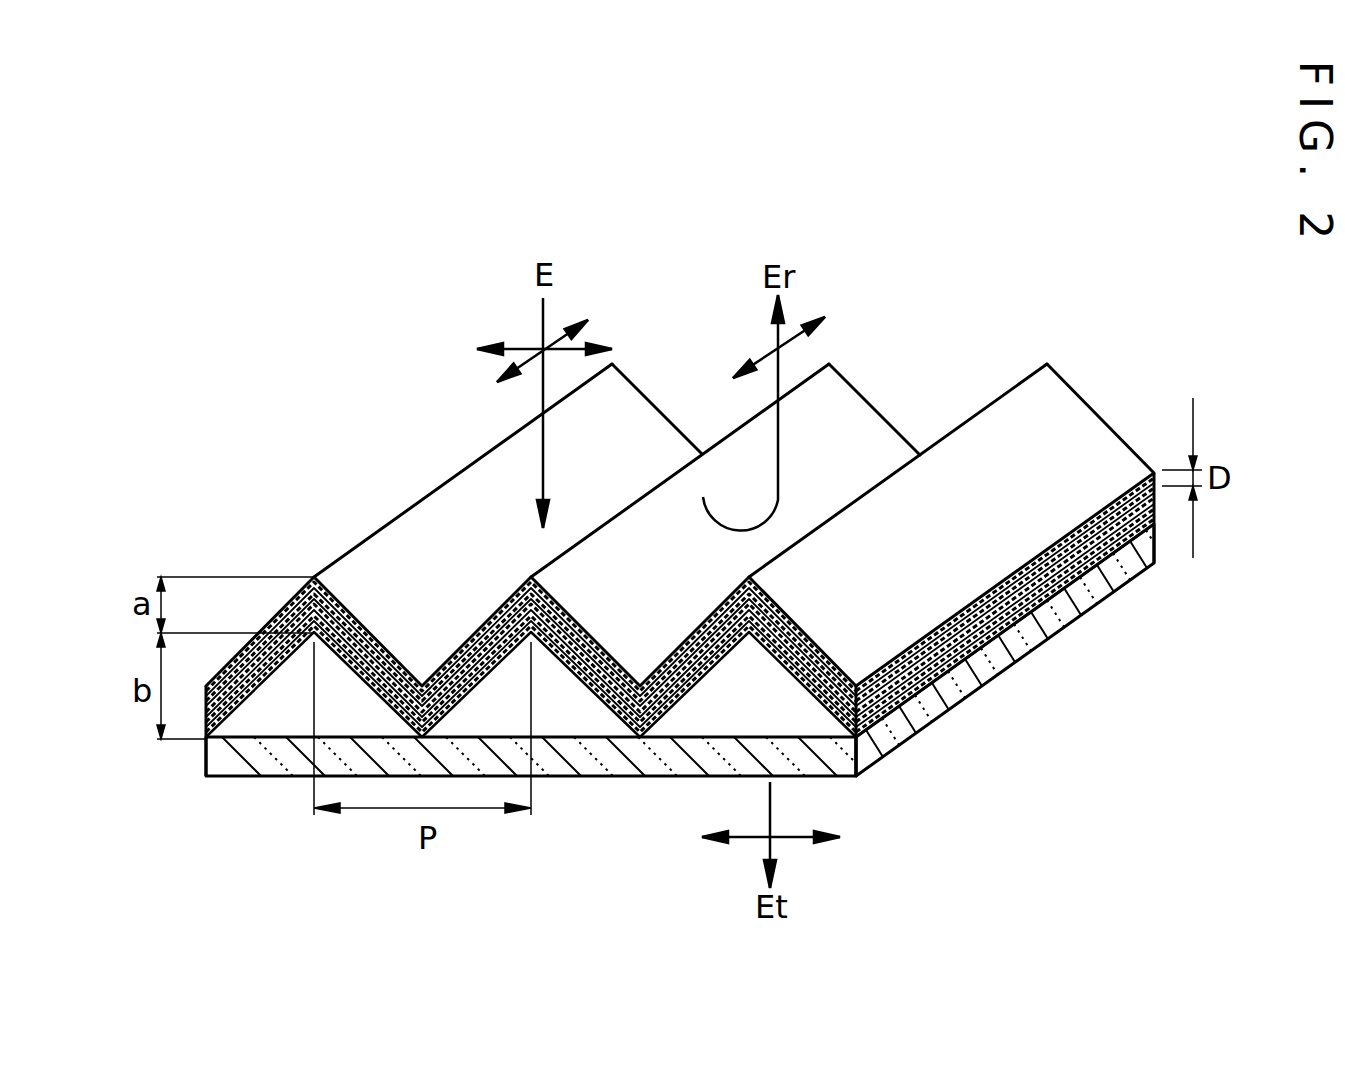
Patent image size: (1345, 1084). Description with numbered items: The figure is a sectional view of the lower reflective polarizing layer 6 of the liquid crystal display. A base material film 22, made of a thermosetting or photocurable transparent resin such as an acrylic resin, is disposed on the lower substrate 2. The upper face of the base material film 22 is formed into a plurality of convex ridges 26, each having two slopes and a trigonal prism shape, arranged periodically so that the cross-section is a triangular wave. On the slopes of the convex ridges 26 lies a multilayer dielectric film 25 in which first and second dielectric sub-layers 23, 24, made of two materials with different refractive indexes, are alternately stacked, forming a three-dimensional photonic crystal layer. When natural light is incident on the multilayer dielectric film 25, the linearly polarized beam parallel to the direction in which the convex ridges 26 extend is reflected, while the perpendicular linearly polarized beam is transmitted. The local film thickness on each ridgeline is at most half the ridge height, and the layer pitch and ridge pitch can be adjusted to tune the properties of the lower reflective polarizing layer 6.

The lower substrate 2 is at (920, 727).
The lower reflective polarizing layer 6 is at (450, 640).
The base material film 22 is at (768, 700).
The first dielectric sub-layer 23 is at (973, 660).
The second dielectric sub-layer 24 is at (1037, 618).
The multilayer dielectric film 25 is at (531, 623).
The convex ridges 26 is at (560, 703).